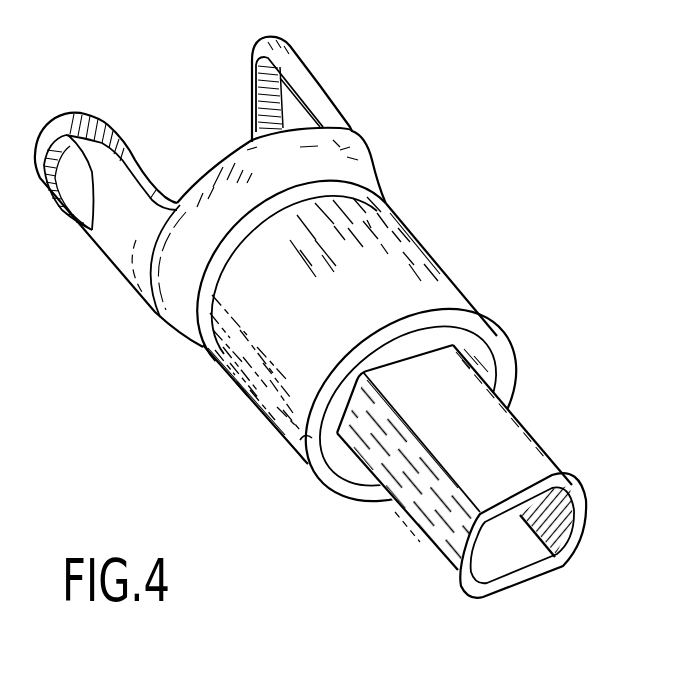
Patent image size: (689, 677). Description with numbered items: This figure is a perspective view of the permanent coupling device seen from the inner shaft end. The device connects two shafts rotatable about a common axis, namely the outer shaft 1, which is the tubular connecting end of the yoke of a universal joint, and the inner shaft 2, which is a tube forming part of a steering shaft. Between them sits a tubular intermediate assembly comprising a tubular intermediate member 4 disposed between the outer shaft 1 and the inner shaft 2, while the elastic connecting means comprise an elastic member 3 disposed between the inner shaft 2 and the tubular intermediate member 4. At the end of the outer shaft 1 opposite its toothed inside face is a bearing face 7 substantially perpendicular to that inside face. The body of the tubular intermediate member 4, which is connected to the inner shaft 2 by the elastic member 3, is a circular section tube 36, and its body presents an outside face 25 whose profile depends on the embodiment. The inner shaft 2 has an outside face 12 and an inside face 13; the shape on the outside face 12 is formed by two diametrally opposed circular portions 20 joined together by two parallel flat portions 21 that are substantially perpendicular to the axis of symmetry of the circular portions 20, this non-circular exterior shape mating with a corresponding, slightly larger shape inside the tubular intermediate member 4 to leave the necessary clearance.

The outer shaft 1 is at (345, 110).
The inner shaft 2 is at (492, 499).
The elastic member 3 is at (484, 356).
The tubular intermediate member 4 is at (441, 265).
The bearing face 7 is at (252, 222).
The outside face 12 is at (407, 512).
The inside face 13 is at (493, 563).
The circular portions 20 is at (589, 522).
The flat portions 21 is at (562, 470).
The outside face 25 is at (243, 396).
The circular section tube 36 is at (297, 435).